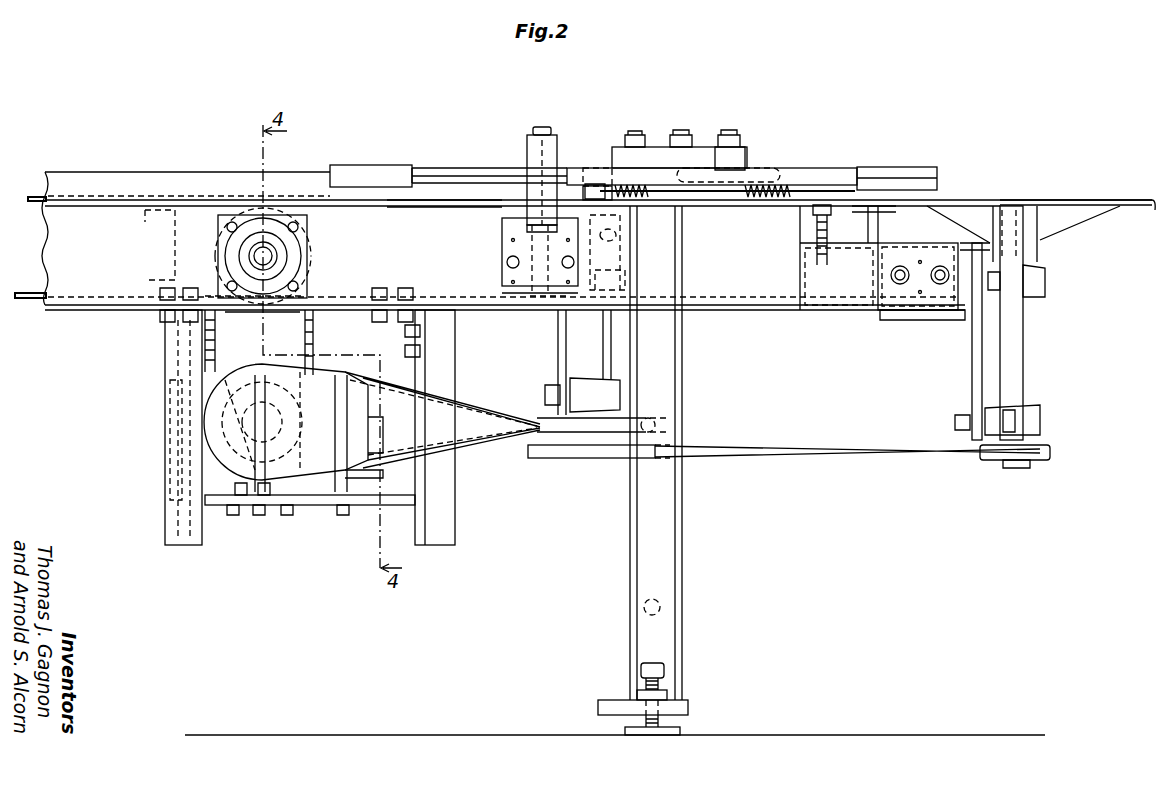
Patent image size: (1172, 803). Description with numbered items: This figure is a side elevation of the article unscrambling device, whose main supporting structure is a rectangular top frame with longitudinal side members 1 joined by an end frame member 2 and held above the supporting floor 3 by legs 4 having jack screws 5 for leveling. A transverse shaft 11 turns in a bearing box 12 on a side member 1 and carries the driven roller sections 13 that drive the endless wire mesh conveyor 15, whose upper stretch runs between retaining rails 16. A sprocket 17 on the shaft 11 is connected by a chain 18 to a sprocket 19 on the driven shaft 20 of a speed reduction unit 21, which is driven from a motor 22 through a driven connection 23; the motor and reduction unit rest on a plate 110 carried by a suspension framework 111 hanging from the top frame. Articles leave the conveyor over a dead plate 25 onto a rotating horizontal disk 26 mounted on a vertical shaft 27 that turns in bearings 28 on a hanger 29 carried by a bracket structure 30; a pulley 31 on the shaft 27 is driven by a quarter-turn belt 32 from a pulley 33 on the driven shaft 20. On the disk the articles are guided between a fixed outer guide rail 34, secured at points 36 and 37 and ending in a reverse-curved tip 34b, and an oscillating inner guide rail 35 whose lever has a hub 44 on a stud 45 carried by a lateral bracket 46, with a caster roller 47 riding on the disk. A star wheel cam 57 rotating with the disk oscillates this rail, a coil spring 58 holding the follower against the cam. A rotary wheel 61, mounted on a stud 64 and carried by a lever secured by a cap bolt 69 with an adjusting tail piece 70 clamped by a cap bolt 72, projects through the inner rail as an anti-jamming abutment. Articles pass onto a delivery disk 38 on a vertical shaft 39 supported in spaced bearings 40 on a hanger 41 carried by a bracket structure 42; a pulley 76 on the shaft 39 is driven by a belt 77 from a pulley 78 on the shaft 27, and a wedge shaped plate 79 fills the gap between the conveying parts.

The longitudinal side member 1 is at (465, 305).
The end frame member 2 is at (810, 300).
The supporting floor 3 is at (490, 735).
The upright or leg 4 is at (668, 557).
The jack screw 5 is at (660, 690).
The second transverse shaft 11 is at (268, 256).
The bearing box or journal 12 is at (240, 251).
The driven roller section 13 is at (208, 268).
The endless conveyor section 15 is at (37, 198).
The retaining rail 16 is at (176, 172).
The sprocket 17 is at (262, 327).
The chain 18 is at (314, 353).
The sprocket 19 is at (240, 386).
The driven shaft 20 is at (263, 422).
The speed reduction unit 21 is at (295, 432).
The motor 22 is at (370, 475).
The driven connection 23 is at (175, 482).
The dead plate 25 is at (438, 207).
The rotating horizontal disk or plate 26 is at (478, 207).
The vertical shaft 27 is at (603, 333).
The bearing 28 is at (620, 260).
The hanger 29 is at (558, 346).
The bracket structure 30 is at (535, 295).
The pulley 31 is at (536, 422).
The quarter-turn belt 32 is at (503, 442).
The pulley 33 is at (216, 367).
The outer guide rail 34 is at (394, 168).
The reverse-curved outer end 34b is at (912, 170).
The inner guide rail 35 is at (795, 168).
The outer guide rail securing point 36 is at (352, 165).
The outer guide rail securing point 37 is at (830, 214).
The rotary delivery disk conveyor 38 is at (1110, 207).
The vertical shaft 39 is at (1023, 347).
The bearing 40 is at (1045, 280).
The hanger 41 is at (972, 365).
The bracket structure 42 is at (875, 322).
The hub portion 44 is at (527, 150).
The vertical shaft or stud 45 is at (548, 128).
The lateral bracket 46 is at (508, 235).
The caster wheel or roller 47 is at (588, 166).
The cam 57 is at (585, 170).
The coil spring 58 is at (750, 200).
The rotary wheel 61 is at (773, 168).
The vertical stud or short shaft 64 is at (730, 135).
The cap bolt 69 is at (680, 132).
The adjusting arm or tail piece 70 is at (655, 147).
The cap bolt 72 is at (632, 135).
The pulley 76 is at (1035, 465).
The belt 77 is at (862, 452).
The pulley 78 is at (565, 460).
The wedge shaped plate 79 is at (880, 217).
The plate 110 is at (319, 505).
The suspension framework 111 is at (467, 504).